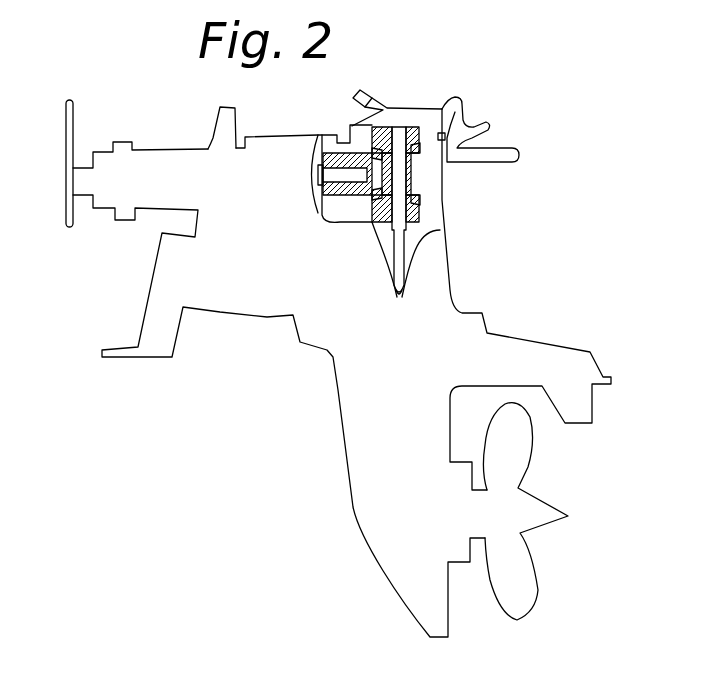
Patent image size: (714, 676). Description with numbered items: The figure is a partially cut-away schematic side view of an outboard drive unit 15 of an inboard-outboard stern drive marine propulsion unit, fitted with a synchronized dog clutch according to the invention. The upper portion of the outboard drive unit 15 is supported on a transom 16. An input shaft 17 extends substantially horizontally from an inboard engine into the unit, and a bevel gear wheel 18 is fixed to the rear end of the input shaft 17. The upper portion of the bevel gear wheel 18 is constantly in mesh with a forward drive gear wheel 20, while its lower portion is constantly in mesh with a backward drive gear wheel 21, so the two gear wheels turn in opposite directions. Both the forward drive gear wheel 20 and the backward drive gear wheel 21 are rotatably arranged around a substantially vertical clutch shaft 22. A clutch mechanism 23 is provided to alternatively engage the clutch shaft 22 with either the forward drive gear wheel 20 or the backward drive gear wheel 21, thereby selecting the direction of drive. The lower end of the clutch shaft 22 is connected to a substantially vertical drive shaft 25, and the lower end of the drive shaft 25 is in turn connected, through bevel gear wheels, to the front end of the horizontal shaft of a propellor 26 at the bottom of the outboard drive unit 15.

The outboard drive unit 15 is at (338, 420).
The transom 16 is at (220, 130).
The input shaft 17 is at (318, 180).
The bevel gear wheel 18 is at (350, 212).
The forward drive gear wheel 20 is at (420, 150).
The backward drive gear wheel 21 is at (374, 213).
The clutch shaft 22 is at (398, 135).
The clutch mechanism 23 is at (434, 177).
The drive shaft 25 is at (398, 300).
The propellor 26 is at (530, 457).